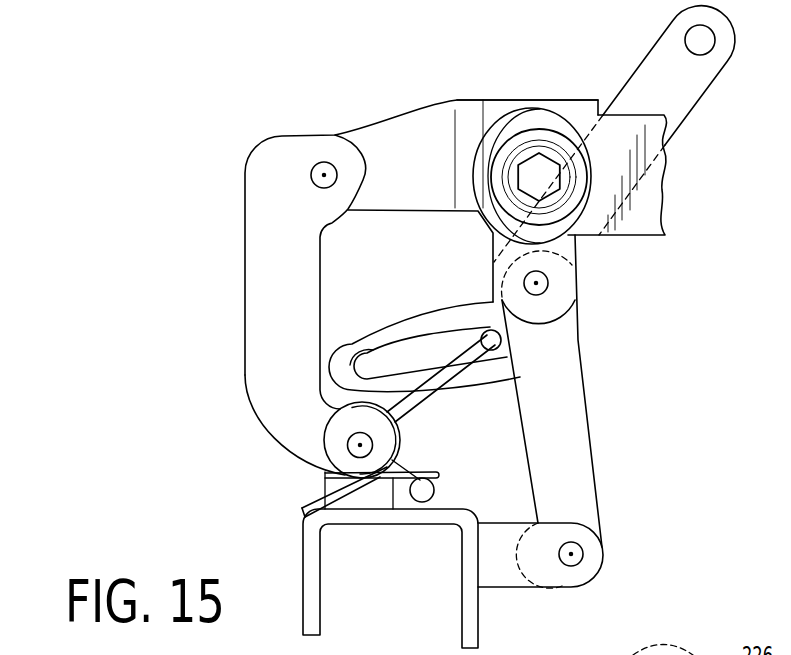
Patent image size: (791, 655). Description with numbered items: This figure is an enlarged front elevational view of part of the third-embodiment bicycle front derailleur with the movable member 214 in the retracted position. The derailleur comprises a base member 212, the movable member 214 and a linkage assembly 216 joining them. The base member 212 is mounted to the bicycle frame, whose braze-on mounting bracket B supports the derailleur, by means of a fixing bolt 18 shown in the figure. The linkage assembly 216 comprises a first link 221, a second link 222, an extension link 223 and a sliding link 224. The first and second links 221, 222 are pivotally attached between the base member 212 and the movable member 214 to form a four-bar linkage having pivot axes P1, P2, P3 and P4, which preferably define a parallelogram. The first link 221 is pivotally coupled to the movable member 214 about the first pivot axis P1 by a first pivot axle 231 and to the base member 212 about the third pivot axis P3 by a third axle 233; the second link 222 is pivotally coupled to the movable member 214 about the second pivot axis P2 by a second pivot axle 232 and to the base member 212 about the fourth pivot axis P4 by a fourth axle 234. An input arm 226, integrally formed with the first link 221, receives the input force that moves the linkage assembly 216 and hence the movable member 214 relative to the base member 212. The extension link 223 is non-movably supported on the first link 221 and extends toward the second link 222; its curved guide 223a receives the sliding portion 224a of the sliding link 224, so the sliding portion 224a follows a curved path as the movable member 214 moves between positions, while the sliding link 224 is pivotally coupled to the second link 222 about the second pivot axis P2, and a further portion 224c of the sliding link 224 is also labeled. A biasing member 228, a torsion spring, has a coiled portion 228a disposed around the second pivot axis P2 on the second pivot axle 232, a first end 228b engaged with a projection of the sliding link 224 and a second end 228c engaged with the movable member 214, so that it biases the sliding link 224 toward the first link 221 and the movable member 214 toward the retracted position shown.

The base member 212 is at (468, 94).
The bolt 18 is at (545, 138).
The input arm 226 is at (658, 42).
The braze-on mounting bracket B is at (665, 170).
The fourth axle 234 is at (314, 166).
The fourth pivot axis P4 is at (324, 175).
The second link 222 is at (238, 222).
The extension link 223 is at (432, 298).
The curved guide 223a is at (344, 374).
The third axle 233 is at (546, 275).
The third pivot axis P3 is at (538, 283).
The sliding portion 224a is at (506, 352).
The sliding link 224 is at (463, 389).
The rod hook end 224c is at (409, 490).
The second pivot axle 232 is at (348, 443).
The second pivot axis P2 is at (359, 445).
The biasing member 228 is at (412, 442).
The coiled portion 228a is at (328, 487).
The first end 228b is at (434, 475).
The second end 228c is at (302, 500).
The linkage assembly 216 is at (606, 440).
The first link 221 is at (604, 468).
The first pivot axle 231 is at (580, 546).
The first pivot axis P1 is at (572, 554).
The movable member 214 is at (294, 570).